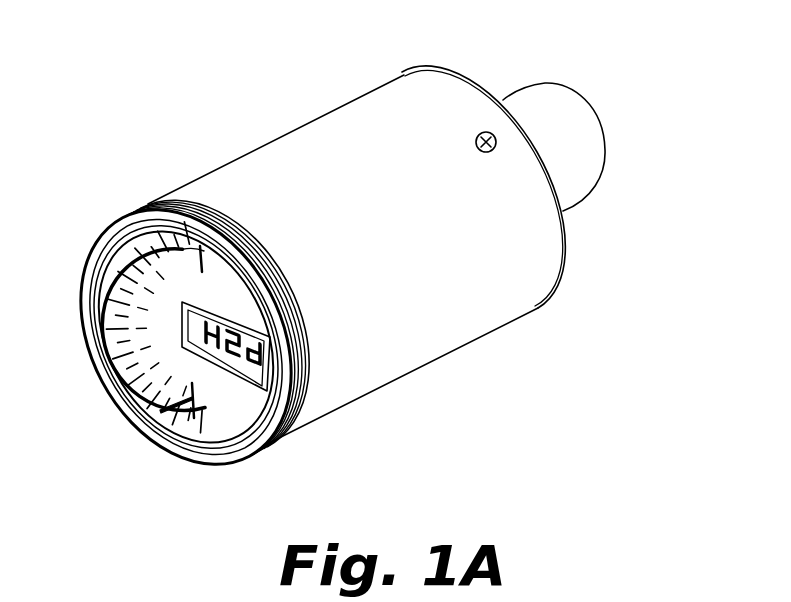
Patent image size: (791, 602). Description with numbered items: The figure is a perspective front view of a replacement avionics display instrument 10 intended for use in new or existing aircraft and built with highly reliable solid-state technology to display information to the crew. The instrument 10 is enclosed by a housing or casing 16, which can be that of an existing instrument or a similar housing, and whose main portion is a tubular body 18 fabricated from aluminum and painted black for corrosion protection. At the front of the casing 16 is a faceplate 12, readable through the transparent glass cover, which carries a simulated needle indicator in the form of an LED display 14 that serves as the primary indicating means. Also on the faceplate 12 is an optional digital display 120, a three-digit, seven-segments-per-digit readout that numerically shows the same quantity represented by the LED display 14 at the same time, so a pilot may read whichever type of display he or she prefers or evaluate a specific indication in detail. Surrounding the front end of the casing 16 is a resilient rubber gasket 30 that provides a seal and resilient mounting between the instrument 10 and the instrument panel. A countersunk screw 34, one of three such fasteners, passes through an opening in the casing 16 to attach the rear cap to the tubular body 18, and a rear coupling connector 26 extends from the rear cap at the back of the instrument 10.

The replacement avionics display instrument 10 is at (380, 277).
The faceplate 12 is at (228, 422).
The LED display 14 is at (168, 405).
The casing 16 is at (478, 363).
The tubular body 18 is at (317, 405).
The rear coupling connector 26 is at (605, 138).
The resilient gasket 30 is at (150, 200).
The countersunk screw 34 is at (482, 130).
The digital display 120 is at (240, 372).